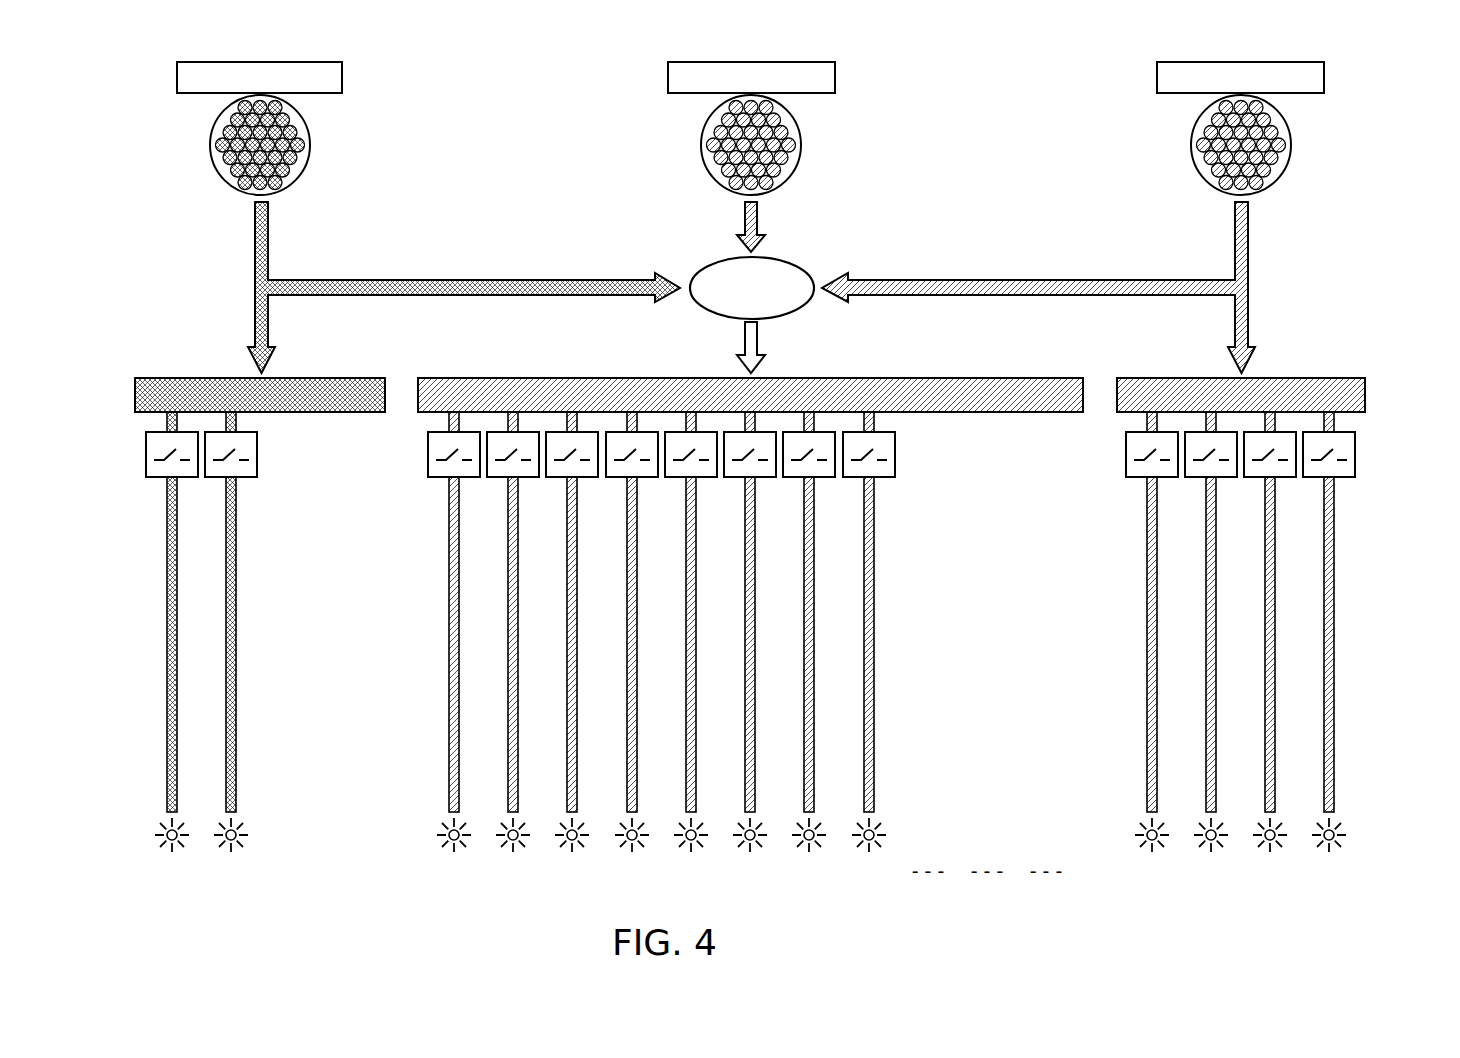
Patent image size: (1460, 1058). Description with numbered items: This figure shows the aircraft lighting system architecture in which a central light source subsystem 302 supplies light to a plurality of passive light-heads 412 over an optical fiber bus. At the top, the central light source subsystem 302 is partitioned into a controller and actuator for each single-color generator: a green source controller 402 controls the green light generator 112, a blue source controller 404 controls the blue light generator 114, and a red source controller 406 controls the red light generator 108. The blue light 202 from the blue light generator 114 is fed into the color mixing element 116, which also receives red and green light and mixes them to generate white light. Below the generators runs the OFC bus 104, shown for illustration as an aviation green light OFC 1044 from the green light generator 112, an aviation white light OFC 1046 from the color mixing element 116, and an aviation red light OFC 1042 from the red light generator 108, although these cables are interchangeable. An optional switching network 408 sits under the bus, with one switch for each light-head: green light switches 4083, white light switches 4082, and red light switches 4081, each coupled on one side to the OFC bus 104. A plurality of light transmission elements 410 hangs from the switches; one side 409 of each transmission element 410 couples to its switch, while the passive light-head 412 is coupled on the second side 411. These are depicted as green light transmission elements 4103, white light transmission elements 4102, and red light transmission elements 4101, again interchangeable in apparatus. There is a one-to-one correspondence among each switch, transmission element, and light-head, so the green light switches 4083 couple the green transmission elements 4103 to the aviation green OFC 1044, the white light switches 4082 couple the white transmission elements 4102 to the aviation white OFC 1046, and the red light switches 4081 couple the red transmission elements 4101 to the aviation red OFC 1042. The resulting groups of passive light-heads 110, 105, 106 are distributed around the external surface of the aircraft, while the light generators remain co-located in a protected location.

The green source controller 402 is at (178, 81).
The blue source controller 404 is at (669, 81).
The red source controller 406 is at (1158, 81).
The green light generator 112 is at (213, 147).
The blue light generator 114 is at (704, 147).
The red light generator 108 is at (1192, 147).
The aviation green light OFC 1044 is at (257, 216).
The blue light 202 is at (745, 216).
The aviation red light OFC 1042 is at (1237, 216).
The color mixing element 116 is at (788, 264).
The aviation white light OFC 1046 is at (742, 340).
The central light source subsystem 302 is at (1372, 50).
The OFC bus 104 is at (1372, 345).
The switching network 408 is at (765, 477).
The red light switch 4081 is at (1106, 452).
The white light switch 4082 is at (409, 452).
The green light switch 4083 is at (130, 452).
The one side of transmission element 409 is at (1420, 481).
The light transmission elements 410 is at (773, 644).
The red light transmission element 4101 is at (1123, 614).
The white light transmission element 4102 is at (425, 614).
The green light transmission element 4103 is at (145, 614).
The second side of transmission element 411 is at (1122, 836).
The passive light-heads 412 is at (801, 827).
The passive light-heads 110 is at (262, 888).
The passive light-heads 105 is at (897, 888).
The passive light-heads 106 is at (1357, 888).